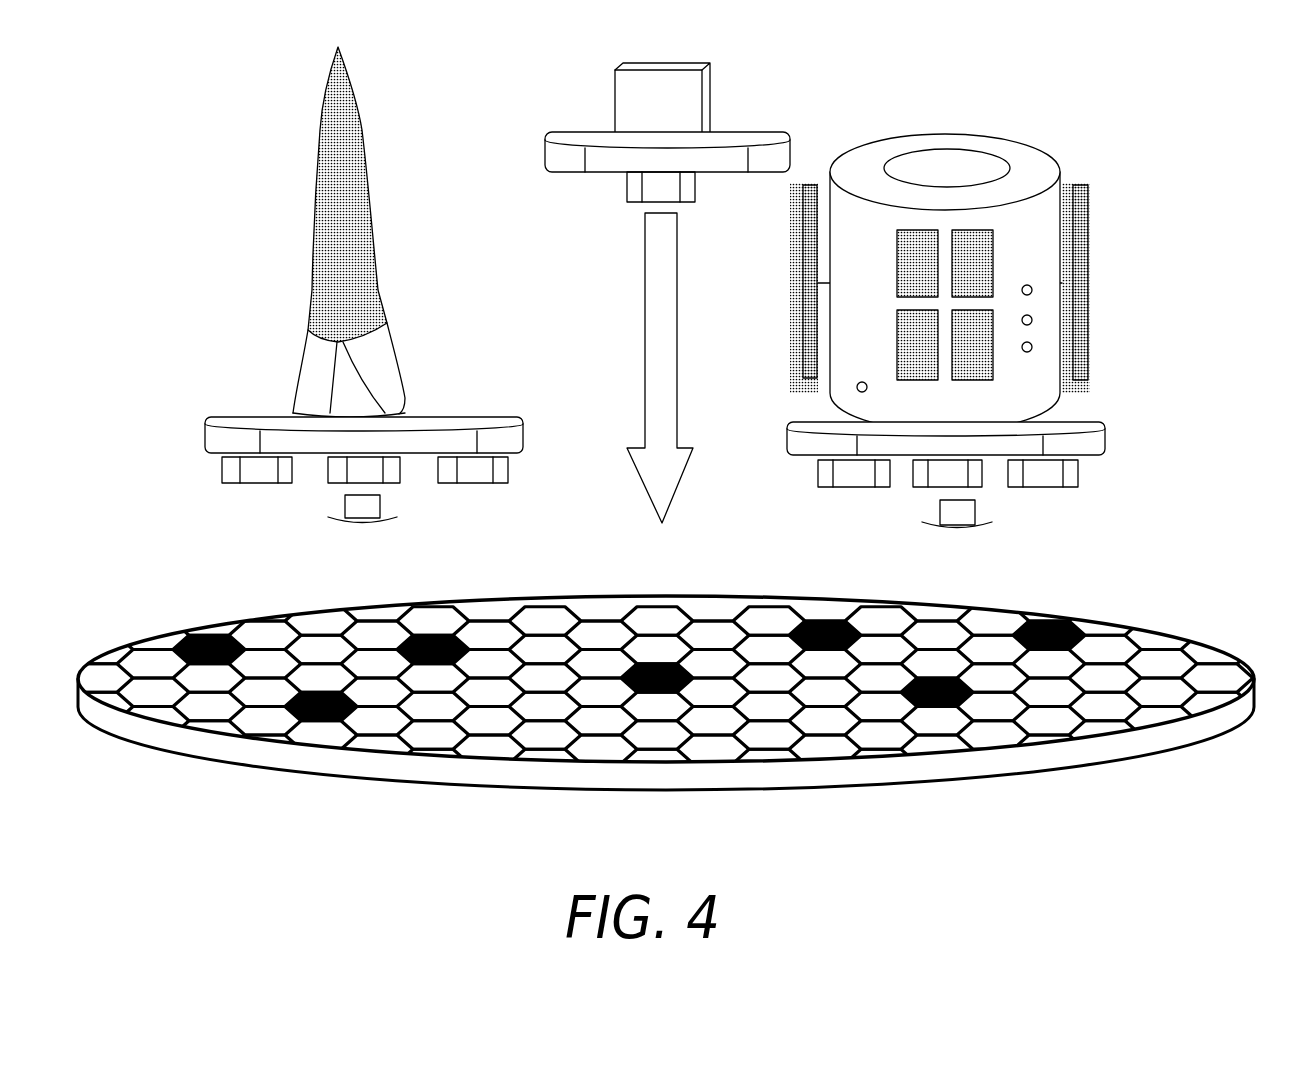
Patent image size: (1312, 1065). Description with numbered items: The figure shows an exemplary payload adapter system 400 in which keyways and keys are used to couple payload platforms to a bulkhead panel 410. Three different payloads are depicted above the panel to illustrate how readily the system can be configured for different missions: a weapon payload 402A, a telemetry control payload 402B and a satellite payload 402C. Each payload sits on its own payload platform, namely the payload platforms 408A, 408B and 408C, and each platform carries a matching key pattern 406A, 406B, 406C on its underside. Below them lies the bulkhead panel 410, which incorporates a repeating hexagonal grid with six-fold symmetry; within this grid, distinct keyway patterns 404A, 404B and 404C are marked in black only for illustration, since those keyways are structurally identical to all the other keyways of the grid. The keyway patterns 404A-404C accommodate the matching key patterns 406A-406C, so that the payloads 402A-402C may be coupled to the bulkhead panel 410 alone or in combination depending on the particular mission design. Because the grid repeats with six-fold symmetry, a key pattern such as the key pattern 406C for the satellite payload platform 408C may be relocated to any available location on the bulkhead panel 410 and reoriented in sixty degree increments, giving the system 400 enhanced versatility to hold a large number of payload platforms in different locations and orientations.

The payload adapter system 400 is at (1102, 105).
The weapon payload 402A is at (372, 364).
The telemetry control payload 402B is at (687, 68).
The satellite payload 402C is at (1060, 162).
The keyway pattern 404A is at (383, 597).
The keyway pattern 404B is at (659, 648).
The keyway pattern 404C is at (1015, 608).
The key pattern 406A is at (464, 503).
The key pattern 406B is at (689, 217).
The key pattern 406C is at (1073, 507).
The payload platform 408A is at (463, 428).
The payload platform 408B is at (760, 140).
The satellite payload platform 408C is at (1085, 428).
The bulkhead panel 410 is at (1183, 637).